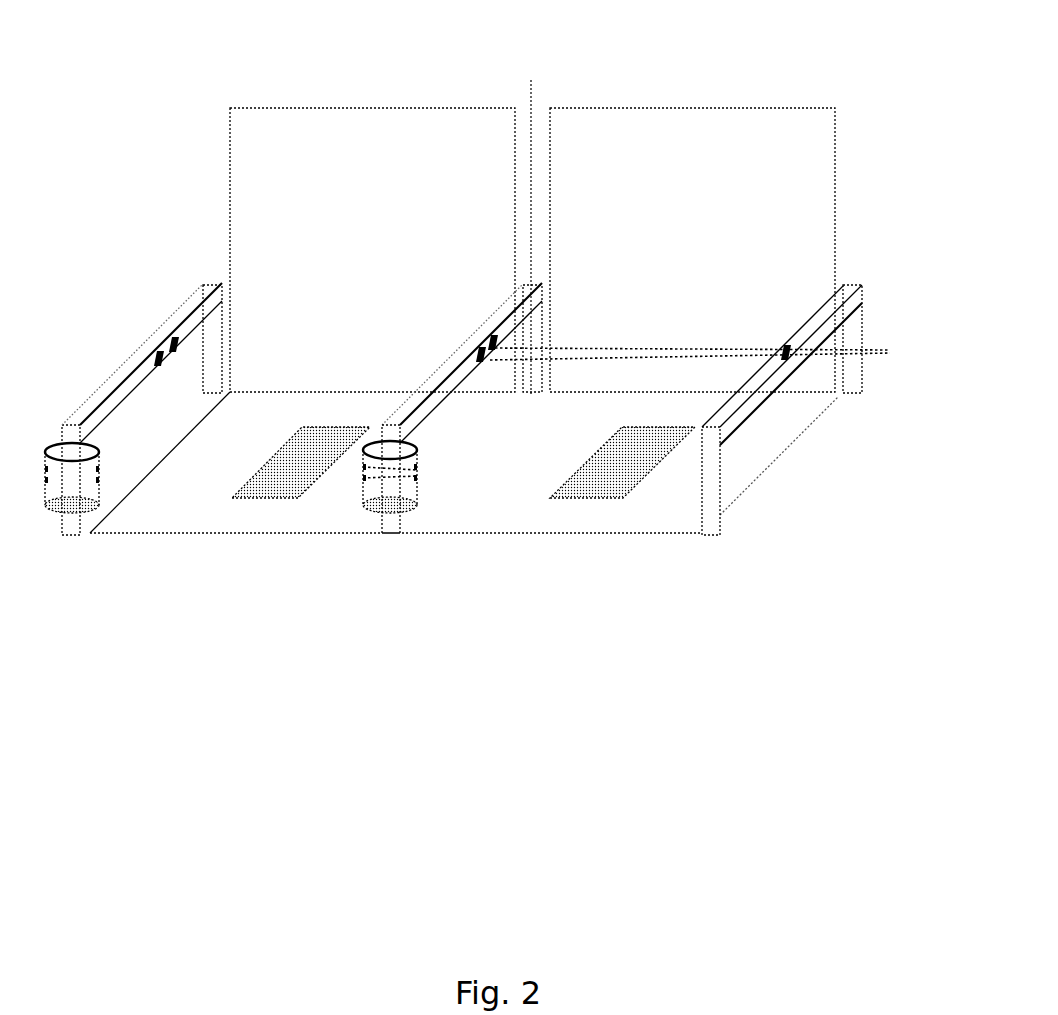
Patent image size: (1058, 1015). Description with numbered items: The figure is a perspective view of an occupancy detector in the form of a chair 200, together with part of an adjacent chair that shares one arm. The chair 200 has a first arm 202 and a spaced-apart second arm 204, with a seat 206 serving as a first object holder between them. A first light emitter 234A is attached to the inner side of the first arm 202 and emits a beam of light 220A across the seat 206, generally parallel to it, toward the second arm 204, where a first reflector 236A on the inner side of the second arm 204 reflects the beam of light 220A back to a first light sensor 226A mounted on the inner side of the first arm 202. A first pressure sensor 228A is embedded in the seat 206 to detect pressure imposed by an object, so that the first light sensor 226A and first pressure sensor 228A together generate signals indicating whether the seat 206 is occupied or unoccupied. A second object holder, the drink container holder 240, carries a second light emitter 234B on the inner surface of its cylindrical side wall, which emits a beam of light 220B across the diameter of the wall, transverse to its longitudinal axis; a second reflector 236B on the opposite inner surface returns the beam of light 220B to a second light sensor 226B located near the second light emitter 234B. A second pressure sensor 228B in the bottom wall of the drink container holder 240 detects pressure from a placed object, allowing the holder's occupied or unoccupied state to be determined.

The chair 200 is at (688, 78).
The first arm 202 is at (532, 223).
The second arm 204 is at (712, 475).
The seat 206 is at (638, 540).
The beam of light 220A is at (632, 349).
The beam of light 220B is at (416, 465).
The first light sensor 226A is at (477, 347).
The second light sensor 226B is at (360, 478).
The first pressure sensor 228A is at (597, 472).
The second pressure sensor 228B is at (378, 510).
The first light emitter 234A is at (487, 342).
The second light emitter 234B is at (362, 467).
The first reflector 236A is at (797, 351).
The second reflector 236B is at (418, 478).
The drink container holder 240 is at (380, 440).